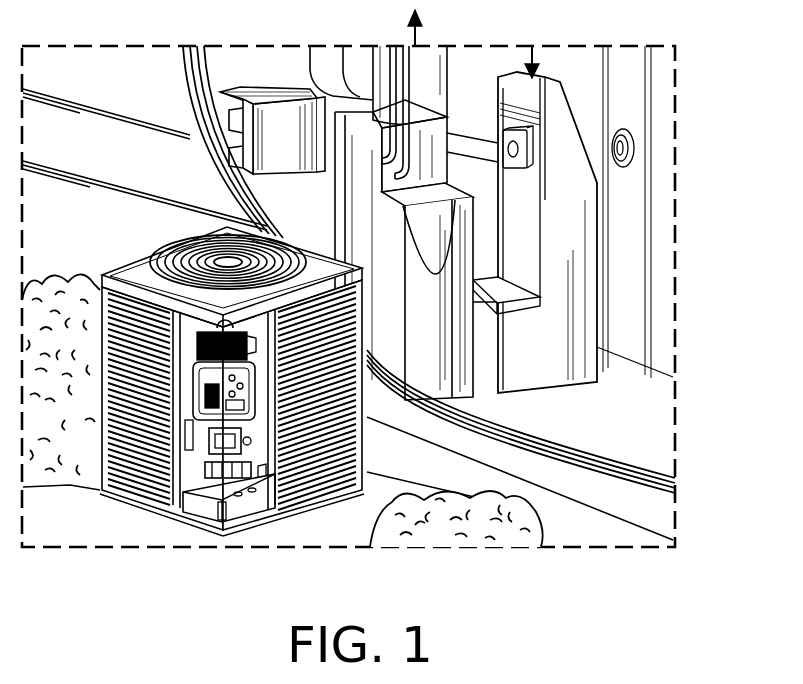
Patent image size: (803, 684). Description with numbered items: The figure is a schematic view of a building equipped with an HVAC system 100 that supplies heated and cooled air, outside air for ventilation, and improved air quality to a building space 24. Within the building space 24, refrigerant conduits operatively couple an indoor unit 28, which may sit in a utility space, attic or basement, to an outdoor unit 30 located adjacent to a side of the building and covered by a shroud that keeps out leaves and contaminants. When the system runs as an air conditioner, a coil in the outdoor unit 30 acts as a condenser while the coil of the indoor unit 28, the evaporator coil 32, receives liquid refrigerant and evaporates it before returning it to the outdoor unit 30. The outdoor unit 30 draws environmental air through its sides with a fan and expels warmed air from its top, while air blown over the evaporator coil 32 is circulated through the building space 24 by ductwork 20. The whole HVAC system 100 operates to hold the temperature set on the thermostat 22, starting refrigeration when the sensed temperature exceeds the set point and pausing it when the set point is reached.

The HVAC system 100 is at (676, 52).
The ductwork 20 is at (590, 252).
The thermostat 22 is at (636, 148).
The building space 24 is at (102, 68).
The indoor unit 28 is at (460, 363).
The outdoor unit 30 is at (120, 490).
The evaporator coil 32 is at (438, 132).